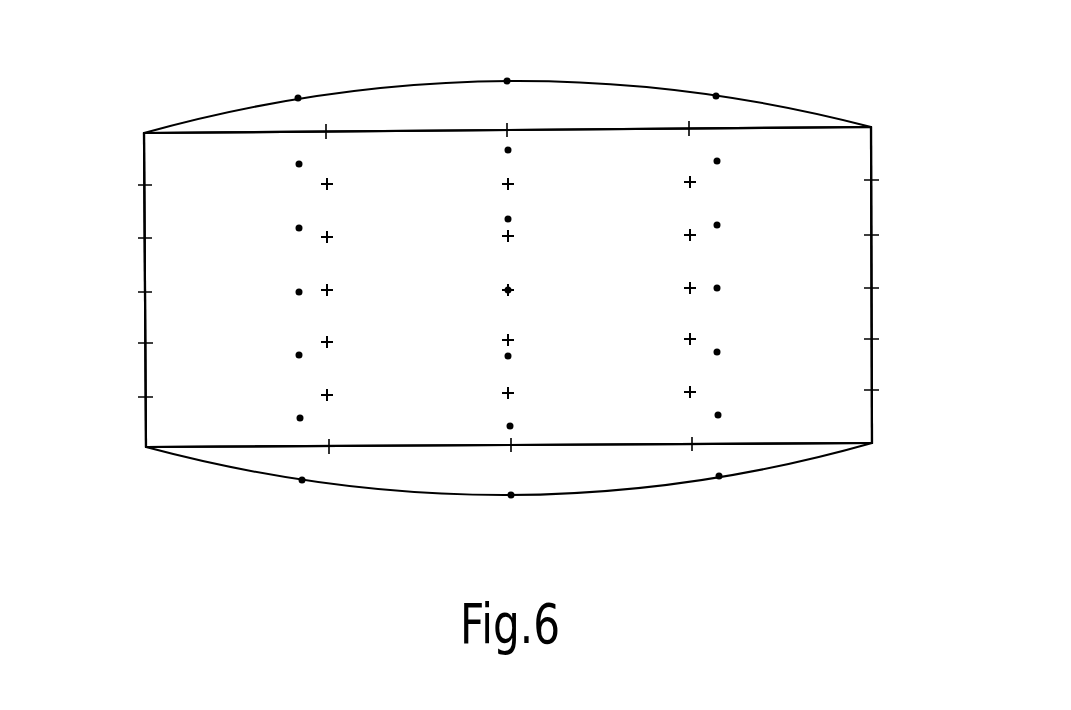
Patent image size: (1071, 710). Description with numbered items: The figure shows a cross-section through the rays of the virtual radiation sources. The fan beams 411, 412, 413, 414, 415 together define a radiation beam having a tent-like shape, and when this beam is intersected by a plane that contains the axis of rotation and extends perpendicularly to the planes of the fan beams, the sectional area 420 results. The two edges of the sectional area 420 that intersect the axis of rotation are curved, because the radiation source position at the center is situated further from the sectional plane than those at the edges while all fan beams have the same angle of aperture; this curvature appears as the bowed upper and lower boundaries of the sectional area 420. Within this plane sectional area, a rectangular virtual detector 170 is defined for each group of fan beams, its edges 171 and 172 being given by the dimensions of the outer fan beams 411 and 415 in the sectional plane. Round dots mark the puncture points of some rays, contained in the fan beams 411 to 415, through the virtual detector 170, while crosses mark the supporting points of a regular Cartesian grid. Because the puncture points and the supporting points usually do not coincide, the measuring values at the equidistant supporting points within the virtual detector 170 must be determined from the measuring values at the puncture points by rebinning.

The virtual detector 170 is at (608, 265).
The edge of the virtual detector 171 is at (407, 133).
The edge of the virtual detector 172 is at (407, 445).
The fan beam 411 is at (143, 153).
The fan beam 412 is at (298, 114).
The fan beam 413 is at (508, 104).
The fan beam 414 is at (717, 114).
The fan beam 415 is at (873, 152).
The sectional area 420 is at (625, 81).